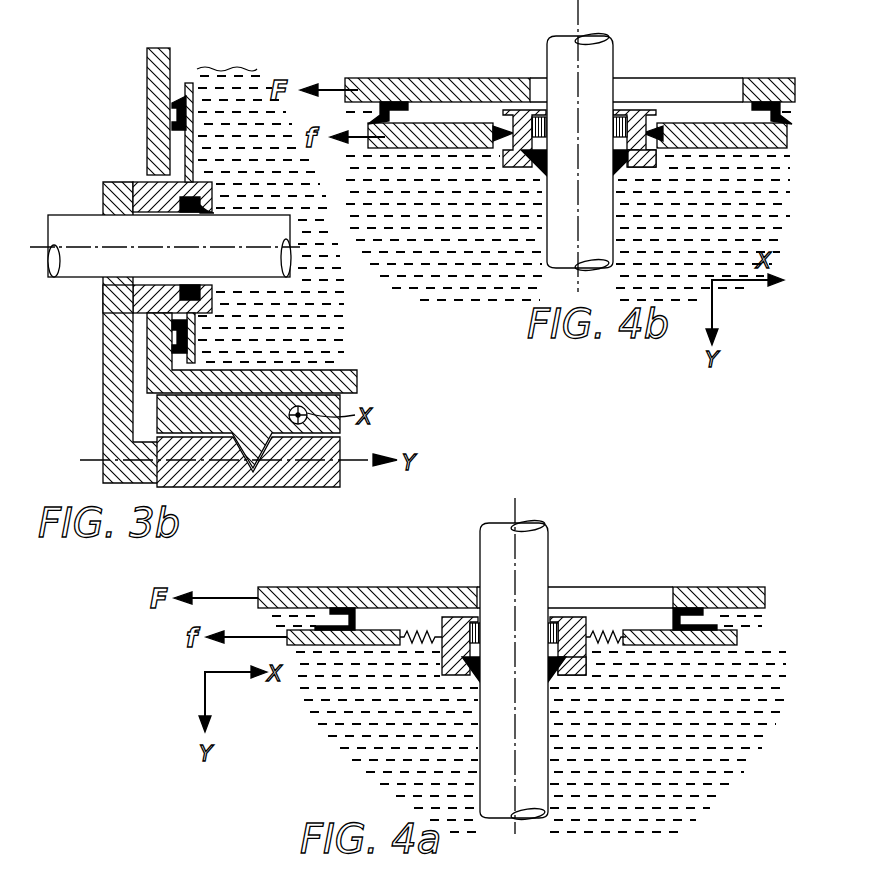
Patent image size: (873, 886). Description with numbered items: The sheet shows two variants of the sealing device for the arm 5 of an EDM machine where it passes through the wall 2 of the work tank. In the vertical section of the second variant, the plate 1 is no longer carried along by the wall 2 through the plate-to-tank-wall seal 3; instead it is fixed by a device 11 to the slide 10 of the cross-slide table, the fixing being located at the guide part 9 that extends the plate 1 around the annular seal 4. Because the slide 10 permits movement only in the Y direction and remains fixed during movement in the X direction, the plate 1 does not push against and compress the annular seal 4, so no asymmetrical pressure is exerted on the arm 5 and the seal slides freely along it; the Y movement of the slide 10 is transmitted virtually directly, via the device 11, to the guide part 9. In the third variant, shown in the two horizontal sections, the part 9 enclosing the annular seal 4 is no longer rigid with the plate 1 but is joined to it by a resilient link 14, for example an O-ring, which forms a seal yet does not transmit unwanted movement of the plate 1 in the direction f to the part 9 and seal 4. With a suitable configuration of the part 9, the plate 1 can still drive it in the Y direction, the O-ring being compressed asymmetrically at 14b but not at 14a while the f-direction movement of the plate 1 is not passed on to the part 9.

In FIG. 3B, the plate 1 is at (194, 140).
In FIG. 4B, the plate 1 is at (772, 138).
In FIG. 4A, the plate 1 is at (688, 646).
In FIG. 3B, the wall 2 is at (158, 76).
In FIG. 4B, the wall 2 is at (432, 88).
In FIG. 4A, the wall 2 is at (735, 596).
In FIG. 3B, the plate-to-tank-wall seal 3 is at (175, 99).
In FIG. 4B, the plate-to-tank-wall seal 3 is at (762, 108).
In FIG. 4A, the plate-to-tank-wall seal 3 is at (690, 616).
In FIG. 3B, the annular seal 4 is at (200, 210).
In FIG. 4B, the annular seal 4 is at (617, 165).
In FIG. 4A, the annular seal 4 is at (557, 678).
In FIG. 3B, the arm 5 is at (268, 279).
In FIG. 4B, the arm 5 is at (560, 231).
In FIG. 4A, the arm 5 is at (500, 750).
In FIG. 3B, the guide part 9 is at (212, 304).
In FIG. 4B, the guide part 9 is at (652, 165).
In FIG. 4A, the guide part 9 is at (583, 668).
In FIG. 3B, the slide 10 is at (270, 483).
In FIG. 3B, the device 11 is at (115, 386).
In FIG. 4A, the link 14 is at (603, 637).
In FIG. 4B, the link portion 14a is at (505, 120).
In FIG. 4B, the link portion 14b is at (655, 122).